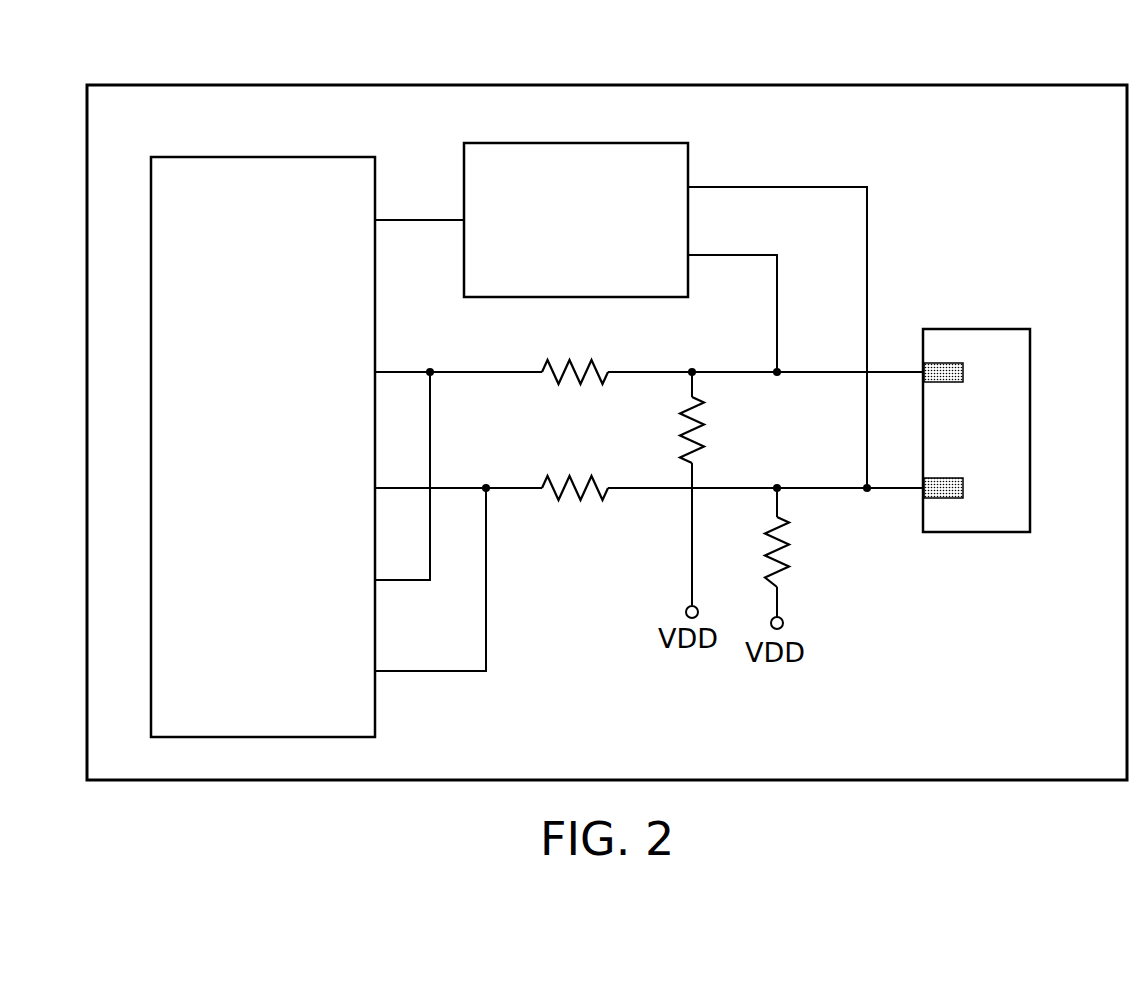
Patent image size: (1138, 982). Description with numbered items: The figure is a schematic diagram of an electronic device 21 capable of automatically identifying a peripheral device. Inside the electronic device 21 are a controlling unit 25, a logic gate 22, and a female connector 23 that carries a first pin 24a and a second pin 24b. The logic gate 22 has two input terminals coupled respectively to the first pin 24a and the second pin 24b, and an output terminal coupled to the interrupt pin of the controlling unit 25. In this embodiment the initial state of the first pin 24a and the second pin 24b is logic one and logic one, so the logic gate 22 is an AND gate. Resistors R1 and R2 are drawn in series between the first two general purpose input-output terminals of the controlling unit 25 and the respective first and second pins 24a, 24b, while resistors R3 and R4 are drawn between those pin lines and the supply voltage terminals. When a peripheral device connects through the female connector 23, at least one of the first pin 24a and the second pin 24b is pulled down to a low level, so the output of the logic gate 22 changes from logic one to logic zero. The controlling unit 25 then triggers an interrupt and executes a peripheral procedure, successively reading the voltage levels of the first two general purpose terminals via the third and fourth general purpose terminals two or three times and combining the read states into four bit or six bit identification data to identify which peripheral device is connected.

The electronic device 21 is at (89, 84).
The logic gate 22 is at (577, 143).
The female connector 23 is at (978, 329).
The first pin 24a is at (963, 372).
The second pin 24b is at (963, 488).
The controlling unit 25 is at (313, 157).
The first resistor R1 is at (592, 363).
The second resistor R2 is at (592, 478).
The third resistor R3 is at (705, 424).
The fourth resistor R4 is at (790, 548).